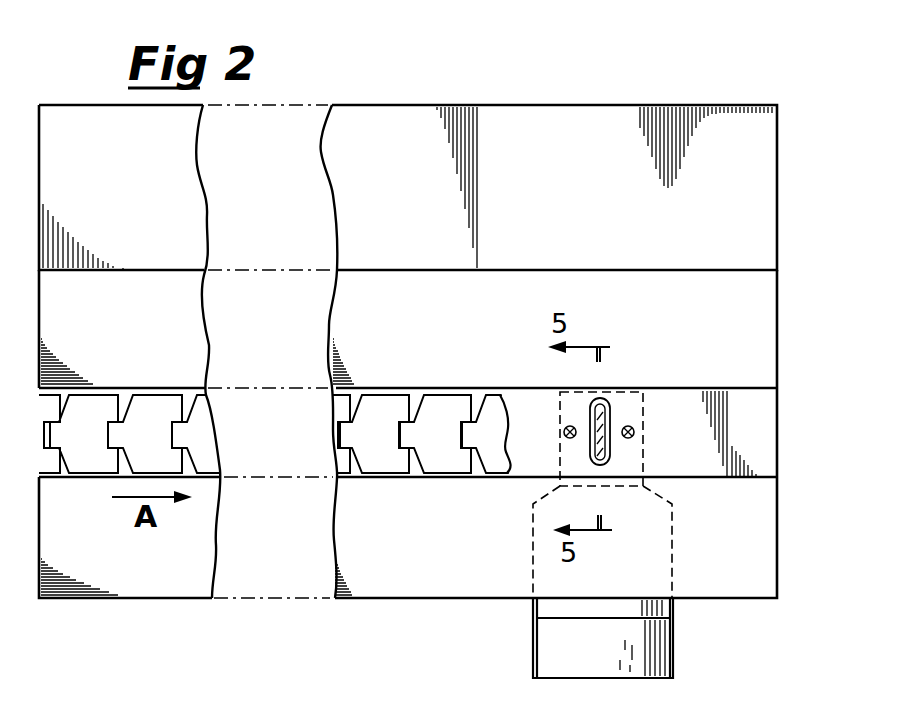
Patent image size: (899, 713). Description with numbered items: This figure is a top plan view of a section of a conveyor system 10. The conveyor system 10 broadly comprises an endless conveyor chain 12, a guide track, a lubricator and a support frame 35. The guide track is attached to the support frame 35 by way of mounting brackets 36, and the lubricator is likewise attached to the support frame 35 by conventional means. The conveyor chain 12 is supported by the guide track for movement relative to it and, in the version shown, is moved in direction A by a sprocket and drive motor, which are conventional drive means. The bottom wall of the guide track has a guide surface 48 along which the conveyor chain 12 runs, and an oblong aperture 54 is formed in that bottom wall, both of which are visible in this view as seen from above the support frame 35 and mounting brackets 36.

The conveyor system 10 is at (466, 637).
The conveyor chain 12 is at (155, 392).
The support frame 35 is at (777, 203).
The mounting brackets 36 is at (777, 322).
The guide surface 48 is at (777, 432).
The oblong aperture 54 is at (608, 408).